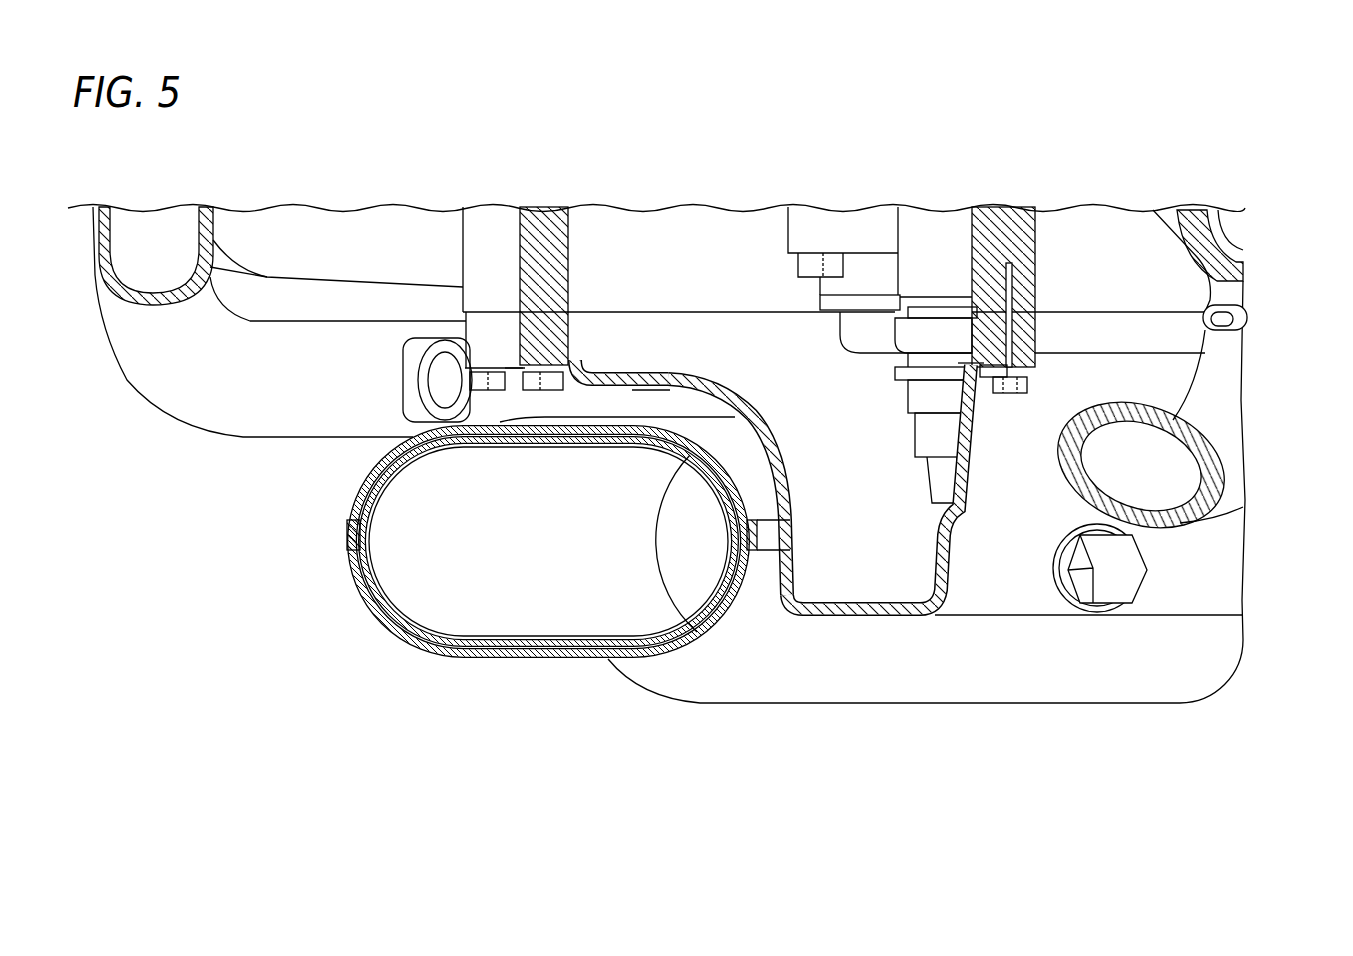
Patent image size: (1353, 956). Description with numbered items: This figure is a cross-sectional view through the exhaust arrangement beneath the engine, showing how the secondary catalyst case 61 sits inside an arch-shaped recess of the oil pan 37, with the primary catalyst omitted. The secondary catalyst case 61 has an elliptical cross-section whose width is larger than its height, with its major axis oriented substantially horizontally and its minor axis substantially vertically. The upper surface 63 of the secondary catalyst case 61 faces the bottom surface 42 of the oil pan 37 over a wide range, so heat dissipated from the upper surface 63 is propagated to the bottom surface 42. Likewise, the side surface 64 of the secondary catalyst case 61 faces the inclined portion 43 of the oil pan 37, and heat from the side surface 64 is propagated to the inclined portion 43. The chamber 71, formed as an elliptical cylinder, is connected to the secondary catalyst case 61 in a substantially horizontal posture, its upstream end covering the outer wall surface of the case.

The oil pan 37 is at (1170, 347).
The bottom surface 42 is at (647, 373).
The inclined portion 43 is at (800, 484).
The secondary catalyst case 61 is at (442, 657).
The upper surface 63 is at (525, 425).
The side surface 64 is at (723, 533).
The chamber 71 is at (1105, 706).